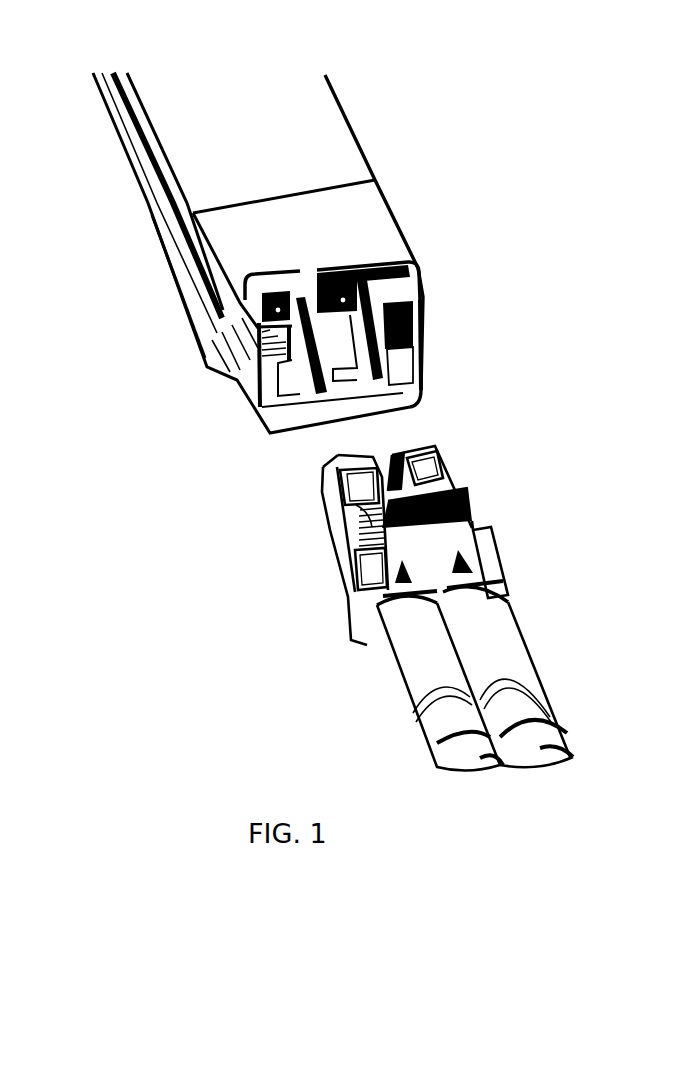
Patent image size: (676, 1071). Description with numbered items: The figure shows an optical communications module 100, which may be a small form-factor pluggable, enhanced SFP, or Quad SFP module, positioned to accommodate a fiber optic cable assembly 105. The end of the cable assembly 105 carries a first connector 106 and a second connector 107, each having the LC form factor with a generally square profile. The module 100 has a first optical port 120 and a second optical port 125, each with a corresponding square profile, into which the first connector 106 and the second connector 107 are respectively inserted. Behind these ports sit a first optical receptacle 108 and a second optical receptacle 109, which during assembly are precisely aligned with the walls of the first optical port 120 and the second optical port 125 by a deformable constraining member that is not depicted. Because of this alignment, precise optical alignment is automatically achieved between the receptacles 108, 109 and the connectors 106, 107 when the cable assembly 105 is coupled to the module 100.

The optical communications module 100 is at (468, 185).
The fiber optic cable assembly 105 is at (565, 535).
The first connector 106 is at (337, 537).
The second connector 107 is at (443, 469).
The first optical receptacle 108 is at (297, 300).
The second optical receptacle 109 is at (360, 293).
The first optical port 120 is at (310, 382).
The second optical port 125 is at (368, 383).